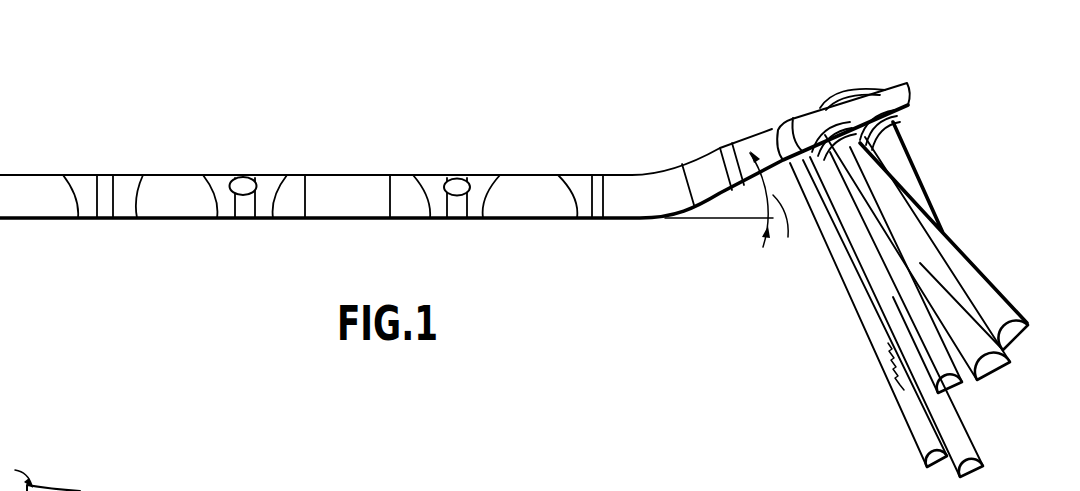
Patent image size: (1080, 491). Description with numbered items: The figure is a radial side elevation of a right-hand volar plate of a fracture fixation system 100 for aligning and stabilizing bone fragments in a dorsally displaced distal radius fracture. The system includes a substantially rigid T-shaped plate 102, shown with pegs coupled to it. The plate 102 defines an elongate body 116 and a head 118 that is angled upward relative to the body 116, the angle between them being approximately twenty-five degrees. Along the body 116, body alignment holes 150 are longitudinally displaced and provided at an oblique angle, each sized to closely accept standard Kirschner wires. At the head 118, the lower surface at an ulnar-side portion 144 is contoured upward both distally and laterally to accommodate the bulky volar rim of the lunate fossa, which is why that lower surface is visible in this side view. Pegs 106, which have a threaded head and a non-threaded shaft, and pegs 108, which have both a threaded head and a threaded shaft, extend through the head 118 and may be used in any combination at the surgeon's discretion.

The fracture fixation system 100 is at (396, 48).
The T-shaped plate 102 is at (578, 173).
The elongate body 116 is at (297, 174).
The body alignment holes 150 is at (238, 181).
The head 118 is at (776, 127).
The ulnar-side portion 144 is at (870, 86).
The pegs 106 is at (943, 380).
The pegs 108 is at (897, 370).